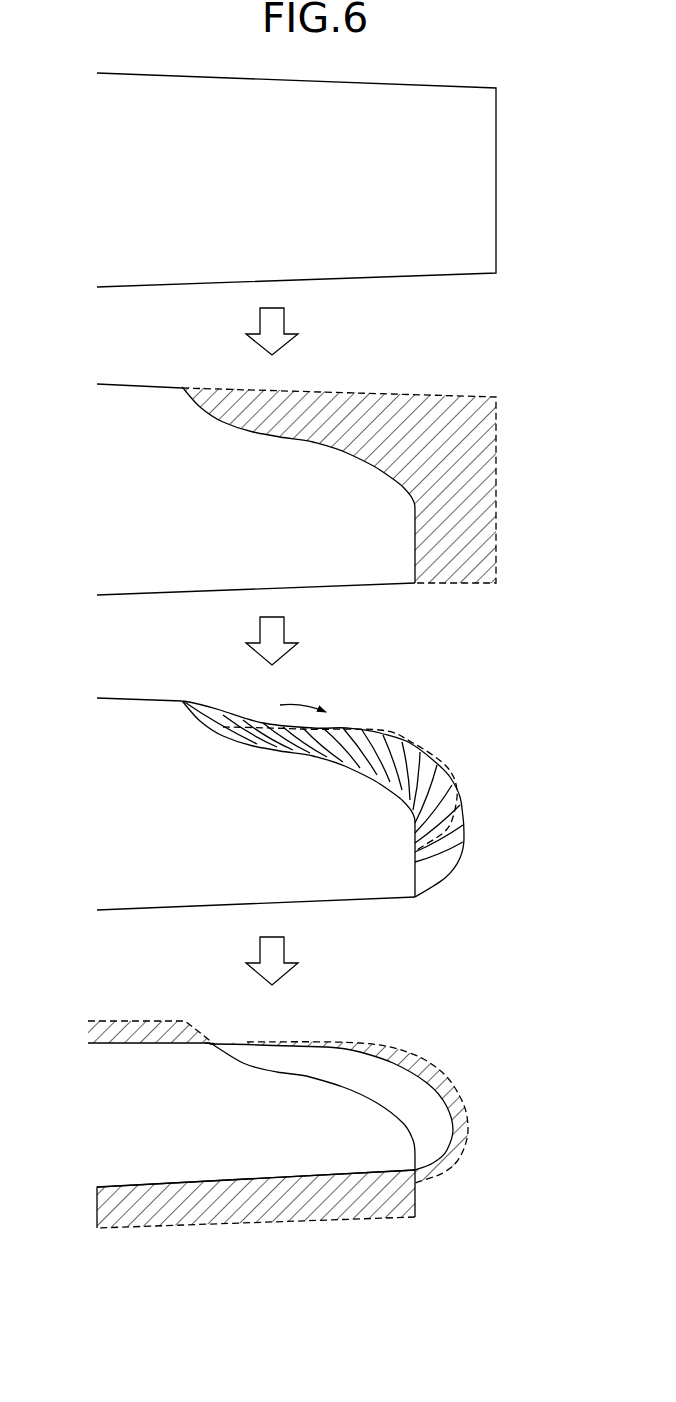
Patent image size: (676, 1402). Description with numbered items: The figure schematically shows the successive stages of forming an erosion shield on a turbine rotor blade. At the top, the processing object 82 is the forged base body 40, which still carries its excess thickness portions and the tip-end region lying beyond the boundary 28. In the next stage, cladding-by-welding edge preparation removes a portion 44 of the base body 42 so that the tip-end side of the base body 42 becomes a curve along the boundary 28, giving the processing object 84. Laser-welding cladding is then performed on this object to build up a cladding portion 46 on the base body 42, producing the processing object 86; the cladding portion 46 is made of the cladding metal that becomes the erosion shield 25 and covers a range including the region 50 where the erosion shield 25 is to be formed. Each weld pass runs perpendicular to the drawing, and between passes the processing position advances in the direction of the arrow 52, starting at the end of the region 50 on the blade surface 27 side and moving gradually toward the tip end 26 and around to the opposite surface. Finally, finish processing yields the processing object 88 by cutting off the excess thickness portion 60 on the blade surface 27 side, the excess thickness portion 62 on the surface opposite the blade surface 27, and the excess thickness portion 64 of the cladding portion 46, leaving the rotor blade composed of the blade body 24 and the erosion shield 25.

The processing object 82 is at (478, 70).
The base body 40 is at (498, 190).
The processing object 84 is at (458, 385).
The base body 42 is at (145, 437).
The portion 44 is at (496, 500).
The processing object 86 is at (467, 693).
The cladding portion 46 is at (347, 703).
The region 50 is at (400, 737).
The arrow 52 is at (301, 705).
The processing object 88 is at (467, 1013).
The blade body 24 is at (145, 1079).
The boundary 28 is at (300, 1077).
The excess thickness portion 60 is at (132, 1030).
The blade surface 27 is at (171, 1040).
The erosion shield 25 is at (327, 1062).
The excess thickness portion 64 is at (418, 1053).
The tip end 26 is at (468, 1110).
The excess thickness portion 62 is at (282, 1208).